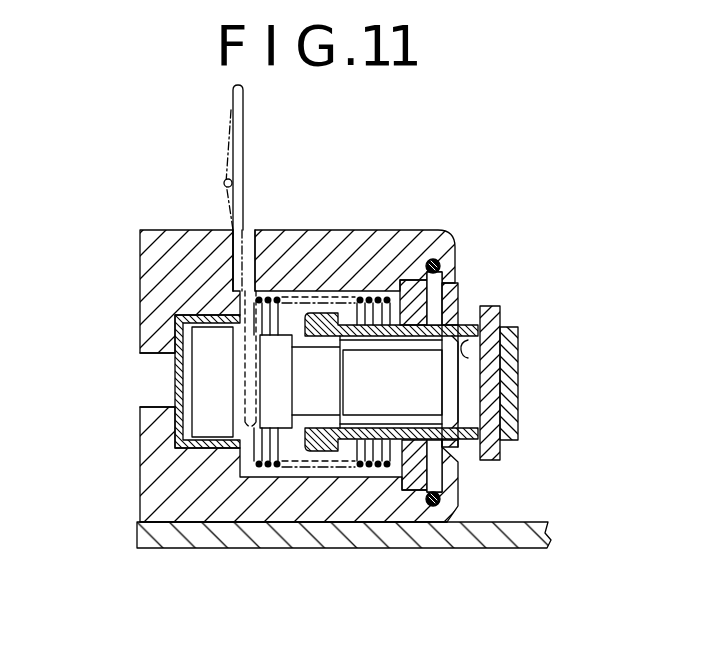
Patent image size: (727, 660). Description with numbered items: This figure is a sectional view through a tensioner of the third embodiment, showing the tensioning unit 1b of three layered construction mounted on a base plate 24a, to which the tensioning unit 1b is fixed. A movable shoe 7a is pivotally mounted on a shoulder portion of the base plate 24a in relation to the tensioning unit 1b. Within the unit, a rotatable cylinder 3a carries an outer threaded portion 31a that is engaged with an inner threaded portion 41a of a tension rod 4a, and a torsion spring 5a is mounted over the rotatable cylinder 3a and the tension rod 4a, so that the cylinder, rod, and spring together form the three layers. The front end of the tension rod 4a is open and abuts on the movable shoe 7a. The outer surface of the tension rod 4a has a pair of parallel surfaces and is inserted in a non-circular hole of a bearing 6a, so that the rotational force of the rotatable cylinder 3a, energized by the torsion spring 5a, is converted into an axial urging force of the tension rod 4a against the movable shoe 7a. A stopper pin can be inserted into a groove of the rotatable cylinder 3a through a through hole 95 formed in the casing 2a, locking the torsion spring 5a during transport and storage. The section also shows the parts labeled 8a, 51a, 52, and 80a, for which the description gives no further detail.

The tensioning unit 1b is at (133, 274).
The base plate 24a is at (336, 542).
The inner threaded portion 41a is at (233, 540).
The cap 52 is at (244, 375).
The through hole 95 is at (250, 242).
The lever 8a is at (240, 150).
The torsion spring 5a is at (310, 292).
The spring seat 51a is at (388, 292).
The casing 2a is at (350, 318).
The outer threaded portion 31a is at (413, 418).
The rotatable cylinder 3a is at (464, 340).
The tension rod 4a is at (456, 322).
The bearing 6a is at (414, 260).
The movable shoe 7a is at (492, 322).
The washer 80a is at (516, 401).